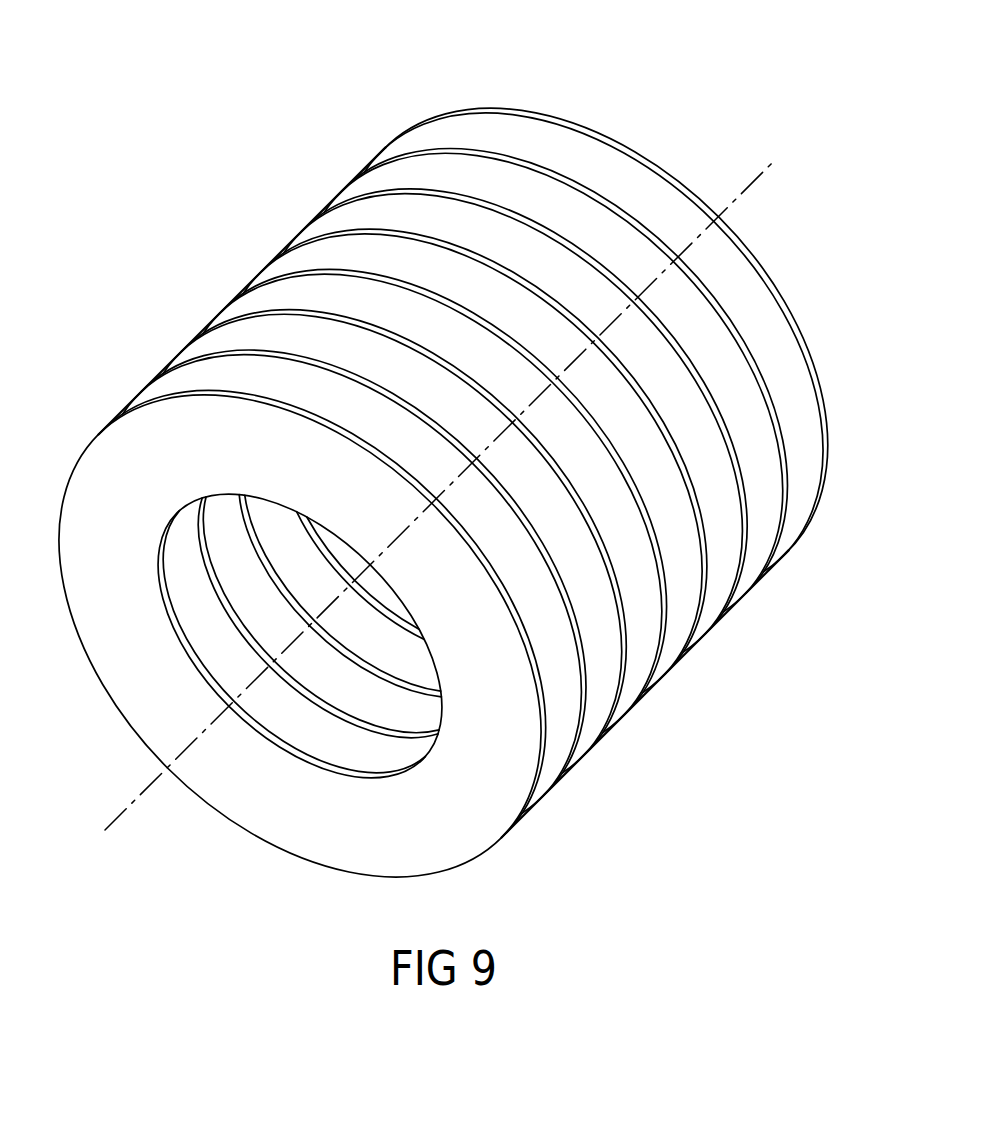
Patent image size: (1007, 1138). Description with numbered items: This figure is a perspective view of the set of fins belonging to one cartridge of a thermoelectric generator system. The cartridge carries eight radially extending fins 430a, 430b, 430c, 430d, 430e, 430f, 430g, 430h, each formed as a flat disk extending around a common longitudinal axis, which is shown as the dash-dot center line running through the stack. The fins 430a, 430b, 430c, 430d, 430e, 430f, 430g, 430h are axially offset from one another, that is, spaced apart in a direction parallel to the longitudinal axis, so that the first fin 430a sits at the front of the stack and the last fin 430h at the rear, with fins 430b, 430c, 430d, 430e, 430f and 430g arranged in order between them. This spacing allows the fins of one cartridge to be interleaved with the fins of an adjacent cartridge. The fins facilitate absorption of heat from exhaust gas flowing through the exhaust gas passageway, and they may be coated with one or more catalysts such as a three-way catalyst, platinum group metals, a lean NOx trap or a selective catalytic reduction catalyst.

The radially extending fin 430a is at (323, 840).
The radially extending fin 430b is at (172, 389).
The radially extending fin 430c is at (593, 717).
The radially extending fin 430d is at (264, 301).
The radially extending fin 430e is at (676, 630).
The radially extending fin 430f is at (342, 219).
The radially extending fin 430g is at (752, 558).
The radially extending fin 430h is at (437, 130).